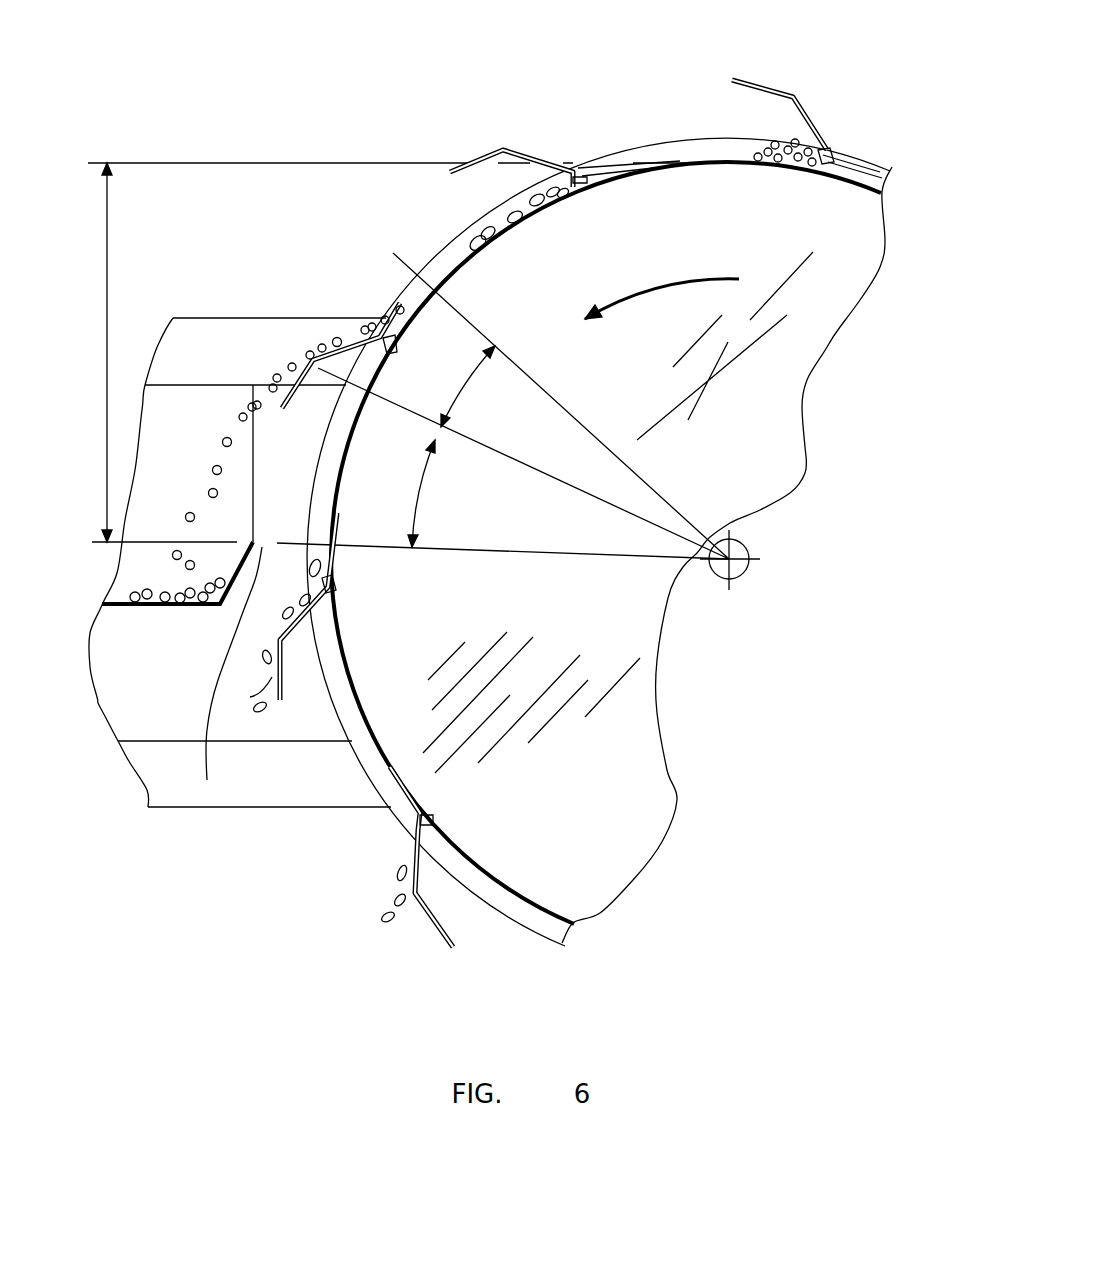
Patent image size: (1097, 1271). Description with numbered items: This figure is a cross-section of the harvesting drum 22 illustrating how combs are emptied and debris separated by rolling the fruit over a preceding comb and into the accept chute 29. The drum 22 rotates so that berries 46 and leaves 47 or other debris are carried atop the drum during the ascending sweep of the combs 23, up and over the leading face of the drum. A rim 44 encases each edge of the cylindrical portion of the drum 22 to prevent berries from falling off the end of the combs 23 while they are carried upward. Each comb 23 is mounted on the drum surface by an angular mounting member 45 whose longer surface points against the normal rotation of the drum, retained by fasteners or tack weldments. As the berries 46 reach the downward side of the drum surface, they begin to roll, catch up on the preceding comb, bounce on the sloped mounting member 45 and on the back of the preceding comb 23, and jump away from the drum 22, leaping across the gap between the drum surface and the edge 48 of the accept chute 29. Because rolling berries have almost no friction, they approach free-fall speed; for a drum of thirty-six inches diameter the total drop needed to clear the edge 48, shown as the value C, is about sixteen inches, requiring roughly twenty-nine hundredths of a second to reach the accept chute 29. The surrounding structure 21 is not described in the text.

The hopper / chute housing 21 is at (208, 318).
The harvesting drum 22 is at (705, 160).
The comb 23 is at (770, 88).
The accept chute 29 is at (128, 608).
The rim 44 is at (655, 137).
The angular mounting member 45 is at (613, 165).
The berries 46 is at (337, 342).
The leaves 47 is at (472, 235).
The edge of the accept chute 48 is at (207, 780).